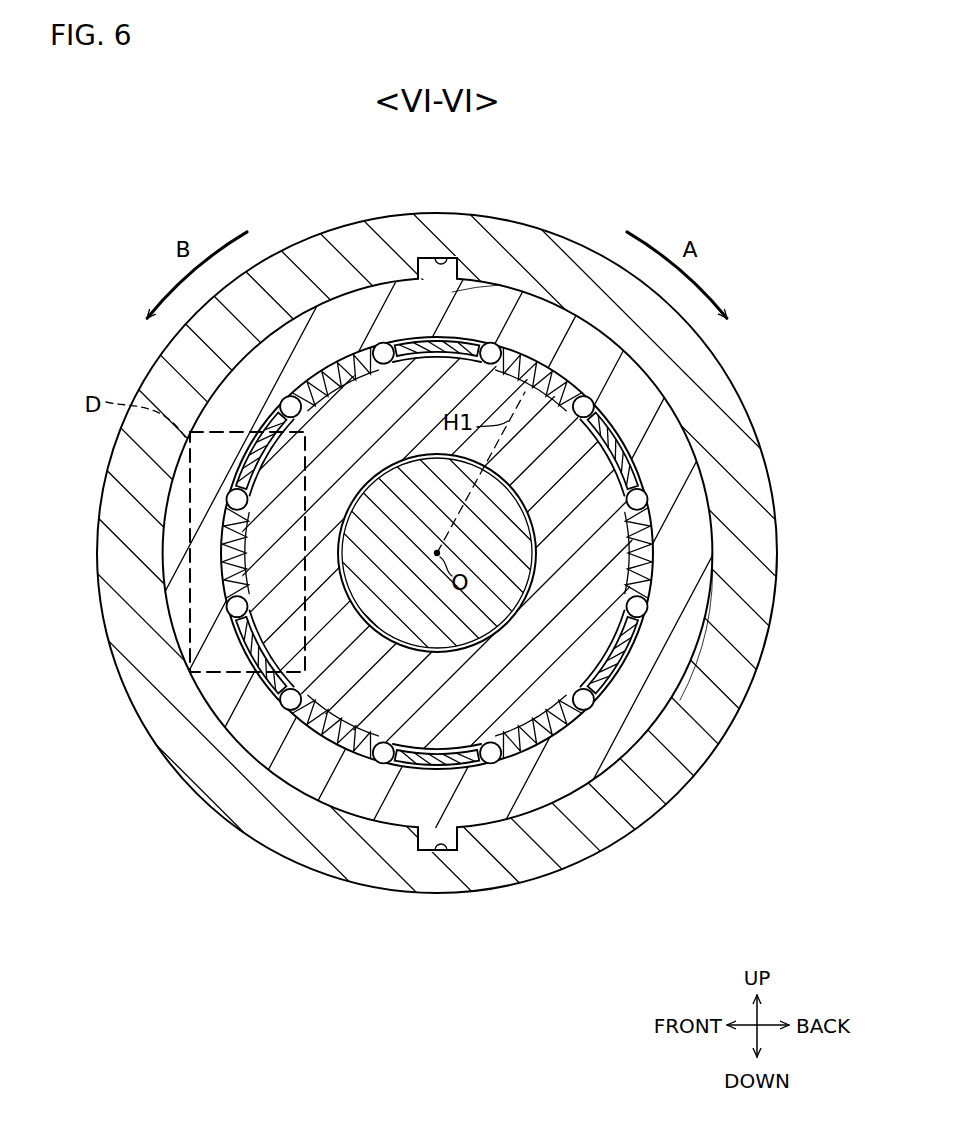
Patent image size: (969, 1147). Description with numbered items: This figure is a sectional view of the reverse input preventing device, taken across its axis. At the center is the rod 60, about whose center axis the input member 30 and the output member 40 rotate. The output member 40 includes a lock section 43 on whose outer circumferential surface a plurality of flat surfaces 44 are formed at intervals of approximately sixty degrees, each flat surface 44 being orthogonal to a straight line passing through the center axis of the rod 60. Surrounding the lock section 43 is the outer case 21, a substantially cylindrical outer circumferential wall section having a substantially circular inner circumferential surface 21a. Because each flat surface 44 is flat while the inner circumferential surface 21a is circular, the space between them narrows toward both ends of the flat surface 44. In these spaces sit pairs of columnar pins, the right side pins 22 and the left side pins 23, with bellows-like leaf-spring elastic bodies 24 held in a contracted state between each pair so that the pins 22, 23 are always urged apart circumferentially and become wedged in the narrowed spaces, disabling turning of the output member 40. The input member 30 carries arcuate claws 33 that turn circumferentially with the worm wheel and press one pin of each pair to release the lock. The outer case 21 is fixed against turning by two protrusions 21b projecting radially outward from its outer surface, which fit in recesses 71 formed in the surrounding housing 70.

The outer case 21 is at (497, 248).
The inner circumferential surface 21a is at (478, 290).
The protrusion 21b is at (428, 268).
The right side pin 22 is at (378, 345).
The left side pin 23 is at (283, 393).
The elastic body 24 is at (332, 362).
The input member 30 is at (754, 533).
The claw 33 is at (415, 327).
The output member 40 is at (417, 533).
The lock section 43 is at (446, 710).
The flat surface 44 is at (345, 392).
The rod 60 is at (424, 630).
The housing 70 is at (583, 243).
The recess 71 is at (445, 268).